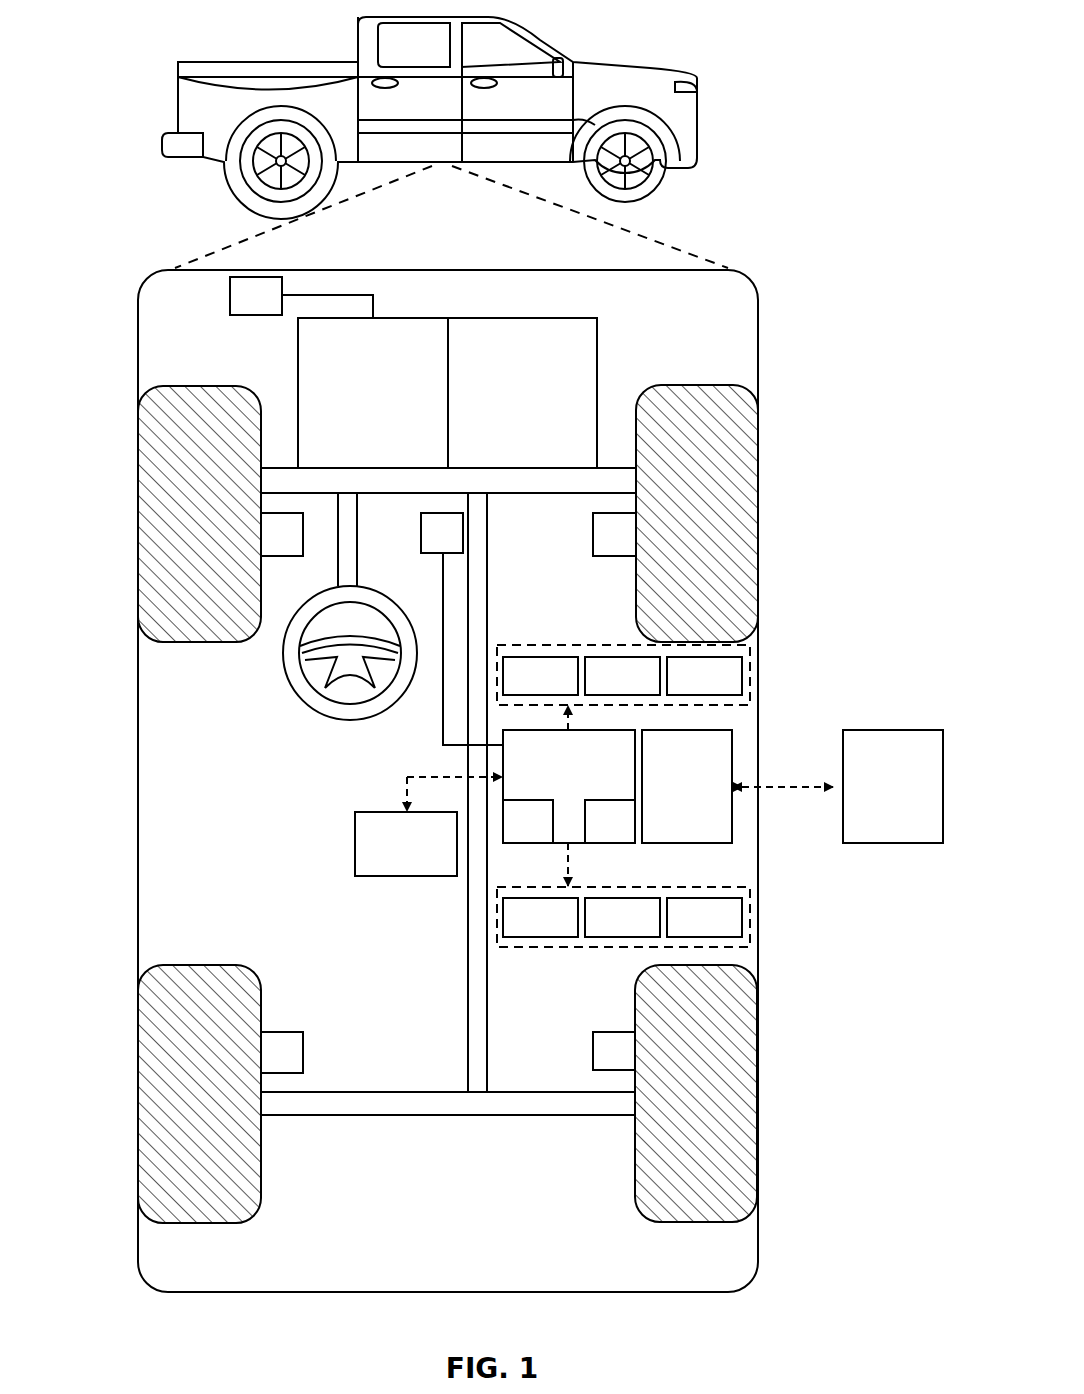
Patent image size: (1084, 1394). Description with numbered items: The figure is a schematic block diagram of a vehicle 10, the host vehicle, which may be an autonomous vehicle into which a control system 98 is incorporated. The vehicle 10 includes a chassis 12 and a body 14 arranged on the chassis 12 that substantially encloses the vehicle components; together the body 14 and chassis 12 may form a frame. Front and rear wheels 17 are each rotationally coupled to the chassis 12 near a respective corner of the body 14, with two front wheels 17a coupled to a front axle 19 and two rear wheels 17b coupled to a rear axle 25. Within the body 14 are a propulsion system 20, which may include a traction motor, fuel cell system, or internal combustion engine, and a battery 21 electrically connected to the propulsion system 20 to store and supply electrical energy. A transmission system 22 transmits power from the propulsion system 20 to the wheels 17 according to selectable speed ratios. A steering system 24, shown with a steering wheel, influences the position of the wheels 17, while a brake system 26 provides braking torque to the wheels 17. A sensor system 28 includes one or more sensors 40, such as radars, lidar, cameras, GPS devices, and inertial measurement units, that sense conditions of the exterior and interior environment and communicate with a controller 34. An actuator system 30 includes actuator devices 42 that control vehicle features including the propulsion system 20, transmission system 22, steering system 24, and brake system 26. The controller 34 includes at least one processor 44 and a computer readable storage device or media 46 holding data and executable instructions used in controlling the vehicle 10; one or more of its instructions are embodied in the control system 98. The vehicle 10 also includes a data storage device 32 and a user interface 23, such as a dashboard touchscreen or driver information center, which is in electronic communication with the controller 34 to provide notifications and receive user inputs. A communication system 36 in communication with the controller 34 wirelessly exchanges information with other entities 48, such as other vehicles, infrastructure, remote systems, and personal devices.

The vehicle 10 is at (640, 62).
The chassis 12 is at (468, 932).
The body 14 is at (138, 743).
The front and rear wheels 17 is at (200, 386).
The front wheels 17a is at (158, 505).
The rear wheels 17b is at (160, 1090).
The front axle 19 is at (560, 494).
The propulsion system 20 is at (373, 393).
The battery 21 is at (256, 277).
The transmission system 22 is at (522, 393).
The user interface 23 is at (462, 629).
The steering system 24 is at (368, 560).
The rear axle 25 is at (523, 1092).
The brake system 26 is at (448, 793).
The sensor system 28 is at (580, 645).
The actuator system 30 is at (587, 948).
The data storage device 32 is at (406, 826).
The controller 34 is at (521, 796).
The communication system 36 is at (737, 786).
The sensors 40 is at (622, 676).
The actuator devices 42 is at (622, 917).
The processor 44 is at (528, 821).
The computer readable storage device or media 46 is at (610, 821).
The other entities 48 is at (893, 786).
The control system 98 is at (782, 288).